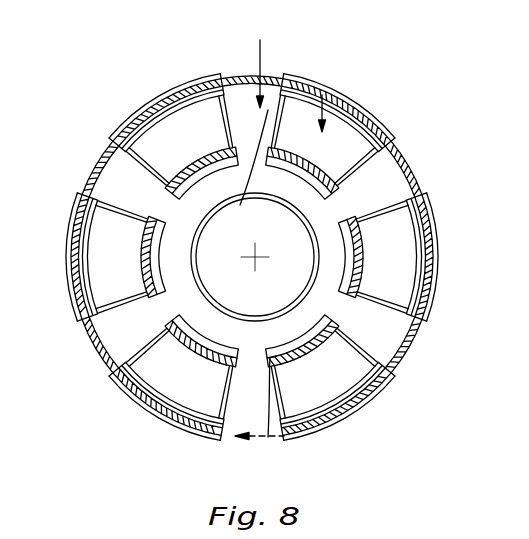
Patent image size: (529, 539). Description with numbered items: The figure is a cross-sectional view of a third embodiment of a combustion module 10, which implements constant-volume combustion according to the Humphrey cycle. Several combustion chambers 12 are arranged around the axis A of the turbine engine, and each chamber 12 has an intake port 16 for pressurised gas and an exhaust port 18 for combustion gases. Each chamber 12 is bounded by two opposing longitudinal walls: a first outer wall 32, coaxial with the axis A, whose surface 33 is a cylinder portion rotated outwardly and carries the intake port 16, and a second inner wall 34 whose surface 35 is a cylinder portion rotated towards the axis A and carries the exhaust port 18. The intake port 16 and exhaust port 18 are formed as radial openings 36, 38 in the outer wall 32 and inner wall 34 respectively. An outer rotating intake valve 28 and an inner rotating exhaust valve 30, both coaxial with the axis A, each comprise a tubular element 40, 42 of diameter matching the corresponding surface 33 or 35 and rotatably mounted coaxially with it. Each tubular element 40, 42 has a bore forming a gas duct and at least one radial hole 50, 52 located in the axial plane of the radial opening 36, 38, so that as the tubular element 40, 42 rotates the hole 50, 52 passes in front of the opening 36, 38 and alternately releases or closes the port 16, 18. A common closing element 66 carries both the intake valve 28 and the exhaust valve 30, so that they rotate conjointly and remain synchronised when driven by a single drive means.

The combustion module 10 is at (370, 64).
The combustion chamber 12 is at (382, 182).
The intake port 16 is at (238, 62).
The exhaust port 18 is at (240, 205).
The rotating intake valve 28 is at (183, 75).
The rotating exhaust valve 30 is at (172, 241).
The first outer wall 32 is at (359, 105).
The outer surface 33 is at (381, 159).
The second inner wall 34 is at (381, 209).
The inner surface 35 is at (268, 110).
The radial opening 36 is at (413, 353).
The radial opening 38 is at (376, 323).
The tubular element 40 is at (154, 108).
The tubular element 42 is at (160, 253).
The radial hole 50 is at (226, 440).
The radial hole 52 is at (255, 262).
The common closing element 66 is at (114, 112).
The axis A is at (268, 437).